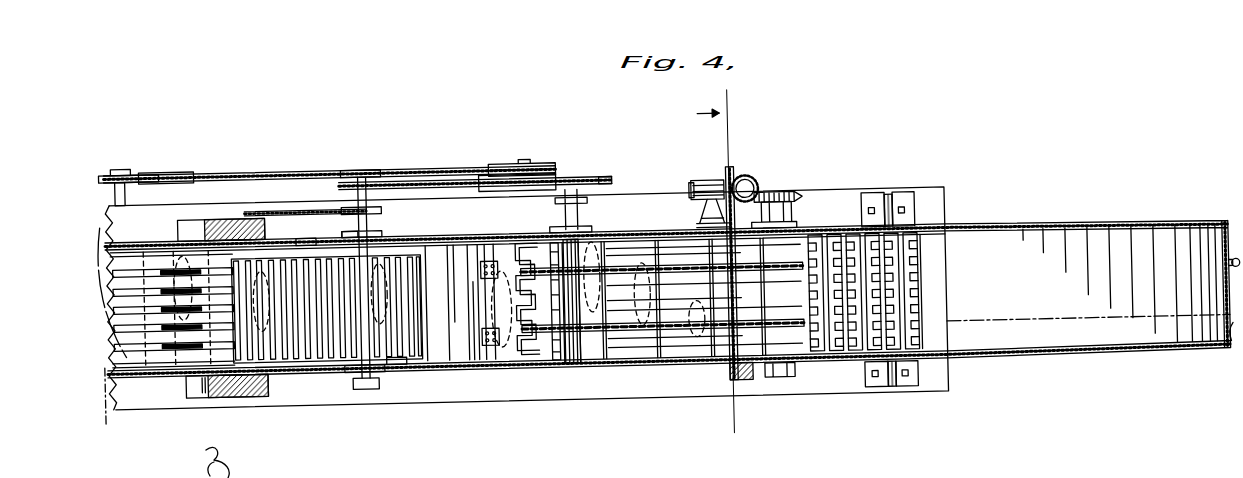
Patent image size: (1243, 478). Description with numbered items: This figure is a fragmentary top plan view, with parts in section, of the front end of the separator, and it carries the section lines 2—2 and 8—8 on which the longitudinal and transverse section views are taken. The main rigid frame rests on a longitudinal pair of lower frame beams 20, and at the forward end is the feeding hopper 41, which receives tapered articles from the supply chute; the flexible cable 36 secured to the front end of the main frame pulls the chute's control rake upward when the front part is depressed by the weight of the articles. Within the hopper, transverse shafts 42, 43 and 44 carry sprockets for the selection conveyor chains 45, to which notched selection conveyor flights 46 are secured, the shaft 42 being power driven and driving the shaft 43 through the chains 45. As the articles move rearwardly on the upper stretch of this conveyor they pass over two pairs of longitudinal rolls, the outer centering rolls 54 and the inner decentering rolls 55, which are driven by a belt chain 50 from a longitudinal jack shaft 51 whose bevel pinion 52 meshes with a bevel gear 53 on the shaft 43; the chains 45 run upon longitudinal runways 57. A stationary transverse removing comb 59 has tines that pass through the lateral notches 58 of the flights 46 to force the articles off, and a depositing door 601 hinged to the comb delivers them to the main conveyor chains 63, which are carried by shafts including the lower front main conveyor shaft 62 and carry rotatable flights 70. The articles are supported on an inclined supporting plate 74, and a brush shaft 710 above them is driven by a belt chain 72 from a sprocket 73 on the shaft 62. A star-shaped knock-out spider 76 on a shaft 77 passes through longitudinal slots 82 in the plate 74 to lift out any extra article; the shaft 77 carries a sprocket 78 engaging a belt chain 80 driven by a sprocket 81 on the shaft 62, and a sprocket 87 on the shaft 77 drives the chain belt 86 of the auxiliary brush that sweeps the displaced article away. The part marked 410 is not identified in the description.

The section line 2— 2 is at (672, 372).
The section line 8— 8 is at (747, 263).
The lower frame beams 20 is at (946, 207).
The flexible cable 36 is at (1233, 284).
The feeding hopper 41 is at (1088, 286).
The transverse shaft 42 is at (590, 192).
The transverse shaft 43 is at (780, 214).
The transverse shaft 44 is at (888, 210).
The selection conveyor chains 45 is at (403, 296).
The notched selection conveyor flights 46 is at (560, 366).
The belt chain 50 is at (734, 183).
The longitudinal jack shaft 51 is at (770, 205).
The bevel pinion 52 is at (752, 191).
The bevel gear 53 is at (804, 213).
The centering rolls 54 is at (640, 253).
The decentering rolls 55 is at (620, 260).
The longitudinal runways 57 is at (678, 262).
The lateral notches 58 is at (526, 362).
The removing comb 59 is at (520, 265).
The lower front main conveyor shaft 62 is at (531, 171).
The main conveyor chains 63 is at (306, 243).
The rotatable flights 70 is at (106, 293).
The belt chain 72 is at (452, 188).
The sprocket 73 is at (560, 185).
The inclined supporting plate 74 is at (292, 366).
The knock-out spider 76 is at (160, 290).
The shaft 77 is at (125, 170).
The sprocket 78 is at (174, 175).
The belt chain 80 is at (283, 176).
The sprocket 81 is at (516, 173).
The longitudinal slots 82 is at (160, 390).
The chain belt 86 is at (285, 215).
The sprocket 87 is at (382, 217).
The pillar foot 410 is at (358, 356).
The depositing door 601 is at (440, 253).
The brush shaft 710 is at (359, 176).